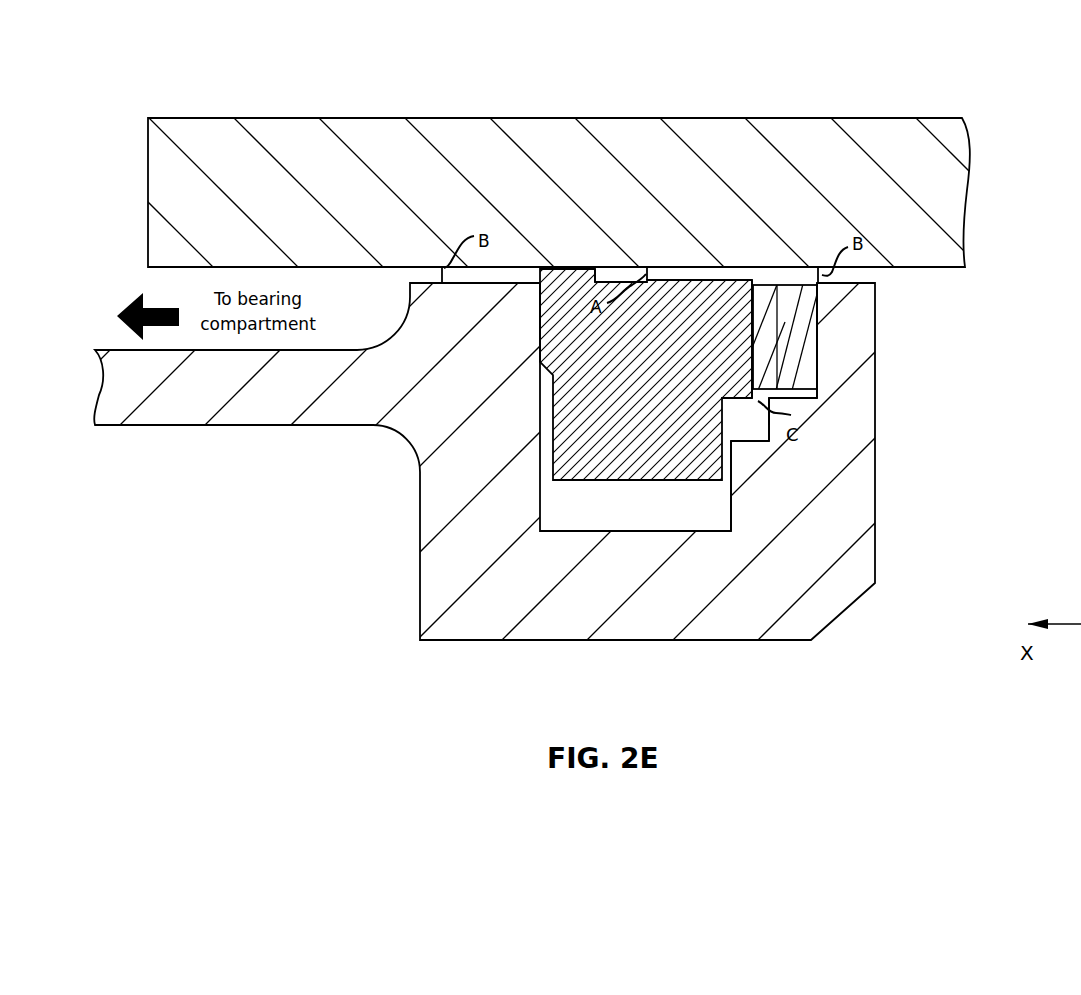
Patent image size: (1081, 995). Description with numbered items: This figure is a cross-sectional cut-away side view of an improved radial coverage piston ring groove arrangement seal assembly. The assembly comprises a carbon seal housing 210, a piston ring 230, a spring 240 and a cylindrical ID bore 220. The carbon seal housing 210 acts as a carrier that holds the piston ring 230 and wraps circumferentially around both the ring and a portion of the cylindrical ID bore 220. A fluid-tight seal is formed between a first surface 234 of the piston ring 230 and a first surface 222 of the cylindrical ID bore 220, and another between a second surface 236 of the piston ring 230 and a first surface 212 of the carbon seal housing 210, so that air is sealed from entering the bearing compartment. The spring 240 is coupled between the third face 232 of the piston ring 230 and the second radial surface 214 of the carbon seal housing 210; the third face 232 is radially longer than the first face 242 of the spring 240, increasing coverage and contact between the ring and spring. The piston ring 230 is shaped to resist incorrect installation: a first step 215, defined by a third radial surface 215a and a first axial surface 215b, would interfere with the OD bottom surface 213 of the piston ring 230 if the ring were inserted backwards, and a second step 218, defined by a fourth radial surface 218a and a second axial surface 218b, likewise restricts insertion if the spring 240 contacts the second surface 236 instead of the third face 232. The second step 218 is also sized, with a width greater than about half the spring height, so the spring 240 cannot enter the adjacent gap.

The carbon seal housing 210 is at (845, 596).
The first surface of the carbon seal housing 212 is at (540, 319).
The OD (bottom) surface of the piston ring 213 is at (553, 480).
The second radial surface of the carbon seal housing 214 is at (817, 332).
The first step 215 is at (755, 445).
The third radial surface 215a is at (732, 512).
The first axial surface 215b is at (737, 443).
The second step 218 is at (777, 400).
The fourth radial surface 218a is at (775, 436).
The second axial surface 218b is at (775, 399).
The cylindrical ID bore 220 is at (912, 132).
The first surface of the cylindrical ID bore 222 is at (589, 270).
The piston ring 230 is at (606, 461).
The third face of the piston ring 232 is at (752, 322).
The first surface of the piston ring 234 is at (551, 268).
The second surface of the piston ring 236 is at (572, 270).
The spring 240 is at (808, 363).
The first face of the spring 242 is at (751, 306).